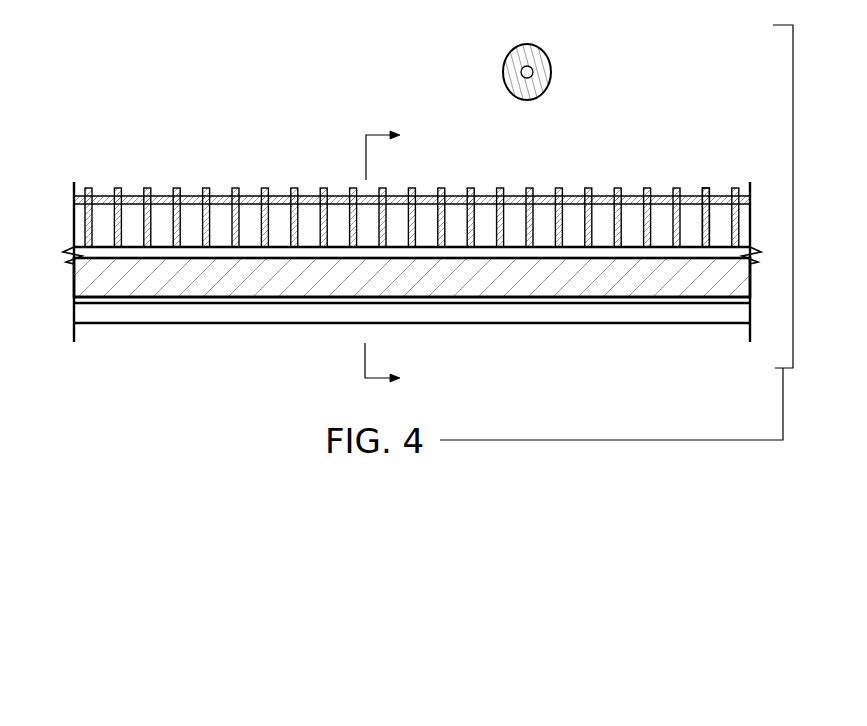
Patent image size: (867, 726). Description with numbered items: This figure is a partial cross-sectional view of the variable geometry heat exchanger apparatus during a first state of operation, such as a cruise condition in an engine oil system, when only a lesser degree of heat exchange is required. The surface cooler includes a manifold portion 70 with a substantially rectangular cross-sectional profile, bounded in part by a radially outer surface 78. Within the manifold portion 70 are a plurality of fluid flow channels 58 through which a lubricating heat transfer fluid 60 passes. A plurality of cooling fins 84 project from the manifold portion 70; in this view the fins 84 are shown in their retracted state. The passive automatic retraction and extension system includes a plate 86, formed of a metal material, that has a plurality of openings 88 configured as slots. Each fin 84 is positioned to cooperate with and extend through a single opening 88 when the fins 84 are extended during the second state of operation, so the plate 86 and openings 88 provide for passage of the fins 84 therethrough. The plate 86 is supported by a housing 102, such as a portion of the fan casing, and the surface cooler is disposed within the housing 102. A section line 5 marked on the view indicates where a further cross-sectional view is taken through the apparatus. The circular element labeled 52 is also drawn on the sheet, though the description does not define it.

The section line 5- 5 is at (389, 262).
The strand cross-section 52 is at (551, 80).
The fluid flow channels 58 is at (623, 290).
The heat transfer fluid 60 is at (382, 289).
The manifold portion 70 is at (164, 307).
The radially outer surface 78 is at (697, 244).
The cooling fins 84 is at (590, 188).
The plate 86 is at (282, 196).
The openings 88 is at (215, 188).
The housing 102 is at (294, 327).